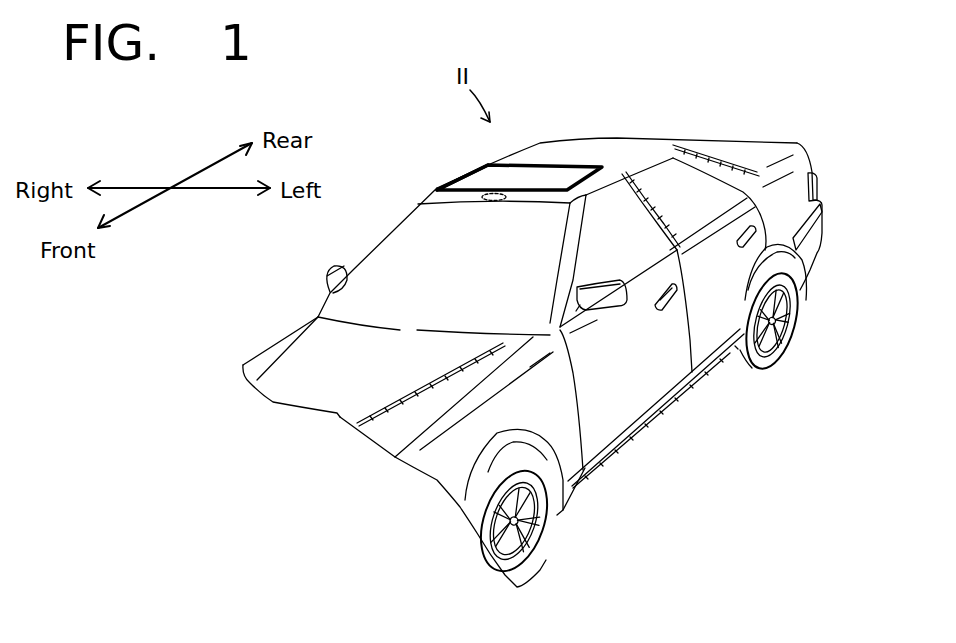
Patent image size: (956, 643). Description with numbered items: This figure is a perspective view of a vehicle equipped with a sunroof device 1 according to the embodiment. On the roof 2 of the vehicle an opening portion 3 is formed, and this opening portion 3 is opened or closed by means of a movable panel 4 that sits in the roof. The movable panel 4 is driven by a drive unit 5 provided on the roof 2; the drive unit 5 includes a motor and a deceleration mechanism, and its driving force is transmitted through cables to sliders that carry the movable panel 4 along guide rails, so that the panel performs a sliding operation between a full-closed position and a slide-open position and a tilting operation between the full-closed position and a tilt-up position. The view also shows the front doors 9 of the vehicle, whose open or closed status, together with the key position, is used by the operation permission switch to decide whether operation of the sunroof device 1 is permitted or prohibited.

The sunroof device 1 is at (433, 158).
The roof 2 is at (582, 150).
The opening portion 3 is at (510, 163).
The movable panel 4 is at (473, 173).
The drive unit 5 is at (493, 202).
The front doors 9 is at (641, 398).